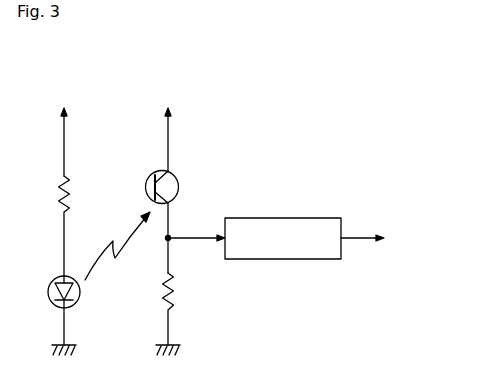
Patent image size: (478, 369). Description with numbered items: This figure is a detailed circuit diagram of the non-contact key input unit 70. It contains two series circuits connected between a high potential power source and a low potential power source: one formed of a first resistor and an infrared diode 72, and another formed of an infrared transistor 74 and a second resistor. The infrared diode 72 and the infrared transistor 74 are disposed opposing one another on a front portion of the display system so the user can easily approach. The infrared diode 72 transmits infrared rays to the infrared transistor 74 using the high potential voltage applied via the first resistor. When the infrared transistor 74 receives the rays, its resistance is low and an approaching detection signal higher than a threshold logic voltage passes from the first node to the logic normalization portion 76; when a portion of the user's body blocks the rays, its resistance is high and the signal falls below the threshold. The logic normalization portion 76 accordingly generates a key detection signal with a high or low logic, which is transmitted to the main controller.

The non-contact key input unit 70 is at (229, 52).
The infrared diode 72 is at (55, 280).
The infrared transistor 74 is at (150, 175).
The logic normalization portion 76 is at (280, 218).